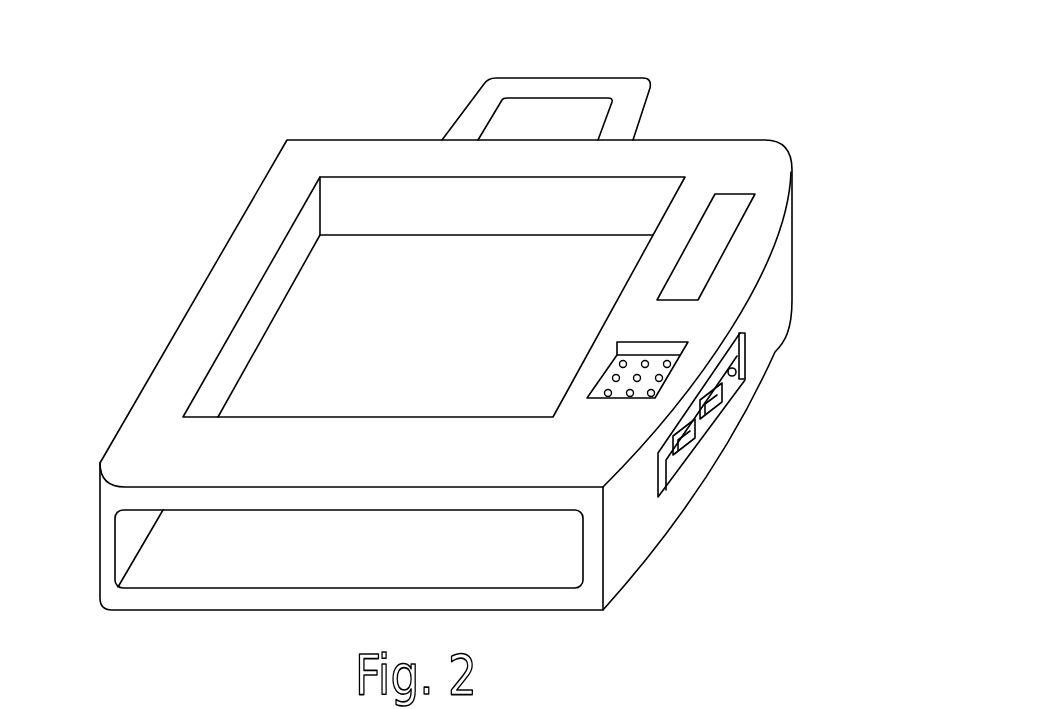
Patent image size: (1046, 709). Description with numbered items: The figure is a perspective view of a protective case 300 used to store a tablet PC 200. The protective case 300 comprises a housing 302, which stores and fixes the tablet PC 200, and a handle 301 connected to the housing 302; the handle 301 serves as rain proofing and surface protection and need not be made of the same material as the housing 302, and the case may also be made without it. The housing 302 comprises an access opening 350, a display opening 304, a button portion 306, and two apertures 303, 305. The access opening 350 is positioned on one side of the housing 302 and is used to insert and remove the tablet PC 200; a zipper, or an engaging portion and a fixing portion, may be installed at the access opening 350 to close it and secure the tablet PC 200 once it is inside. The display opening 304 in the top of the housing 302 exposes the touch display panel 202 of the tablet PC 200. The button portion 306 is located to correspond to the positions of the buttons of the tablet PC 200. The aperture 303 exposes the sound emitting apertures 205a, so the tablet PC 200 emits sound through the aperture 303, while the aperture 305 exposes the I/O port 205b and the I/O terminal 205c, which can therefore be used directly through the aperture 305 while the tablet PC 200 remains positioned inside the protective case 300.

The tablet PC 200 is at (620, 272).
The touch display panel 202 is at (390, 256).
The sound emitting apertures 205a is at (627, 398).
The input/output (I/O) port 205b is at (707, 405).
The input/output (I/O) terminal 205c is at (743, 346).
The protective case 300 is at (477, 357).
The handle 301 is at (548, 90).
The housing 302 is at (190, 310).
The aperture 303 is at (615, 511).
The display opening 304 is at (292, 417).
The aperture 305 is at (781, 455).
The button portion 306 is at (740, 226).
The access opening 350 is at (192, 550).